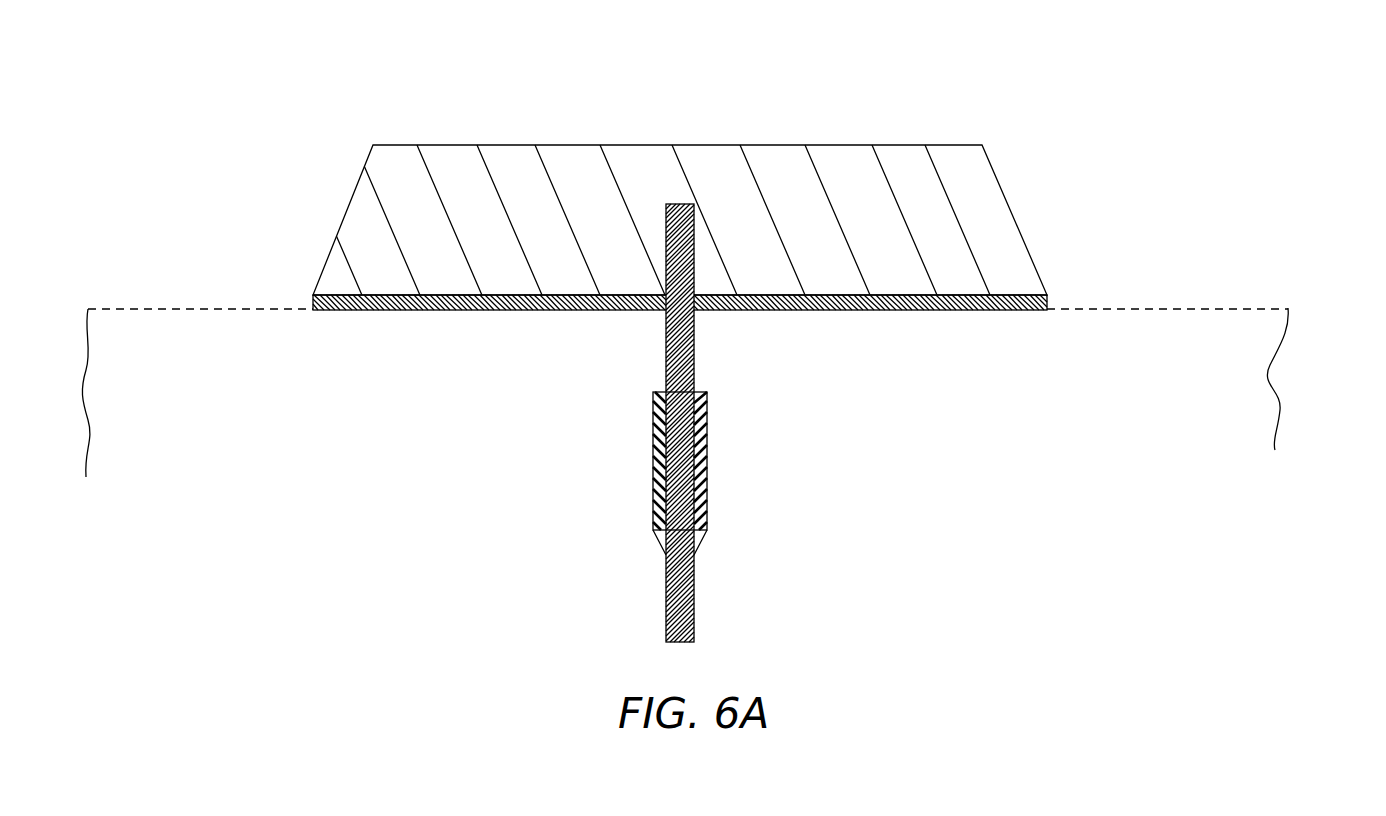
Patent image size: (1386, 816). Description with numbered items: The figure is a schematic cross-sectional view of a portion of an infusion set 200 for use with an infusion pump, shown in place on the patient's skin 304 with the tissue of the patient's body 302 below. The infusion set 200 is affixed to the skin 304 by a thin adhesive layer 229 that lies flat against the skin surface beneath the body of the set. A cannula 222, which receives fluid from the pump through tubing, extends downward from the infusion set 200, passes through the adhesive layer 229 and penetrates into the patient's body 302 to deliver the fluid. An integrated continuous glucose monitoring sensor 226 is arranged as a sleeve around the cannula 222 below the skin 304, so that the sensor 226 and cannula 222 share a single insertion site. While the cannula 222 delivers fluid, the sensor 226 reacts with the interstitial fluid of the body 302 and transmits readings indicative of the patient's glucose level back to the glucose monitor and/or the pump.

The infusion set 200 is at (1022, 140).
The base plate 229 is at (312, 305).
The cannula 222 is at (697, 602).
The glucose sensor 226 is at (707, 470).
The patient's skin 304 is at (1220, 305).
The patient's body 302 is at (1205, 405).